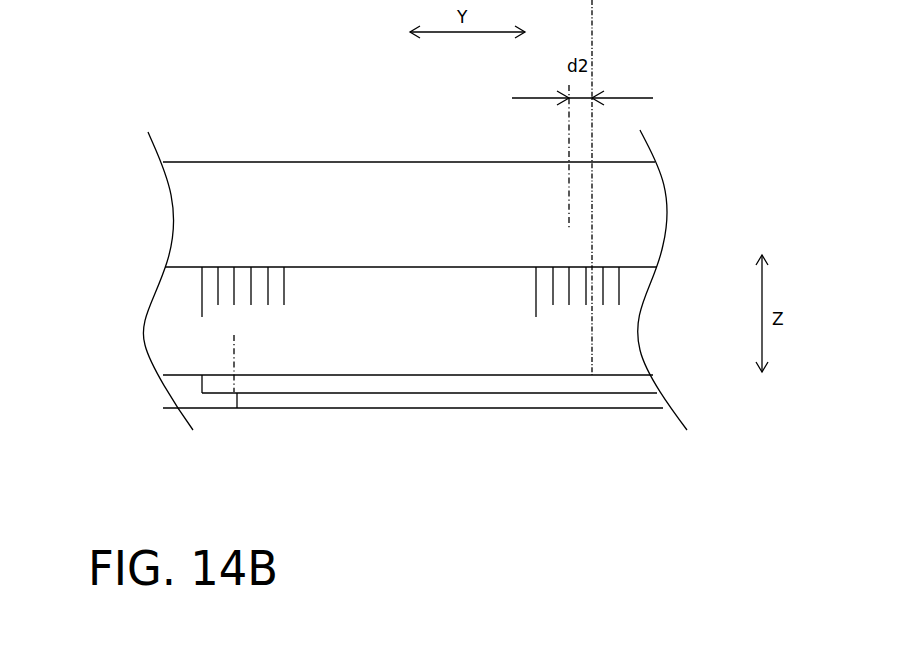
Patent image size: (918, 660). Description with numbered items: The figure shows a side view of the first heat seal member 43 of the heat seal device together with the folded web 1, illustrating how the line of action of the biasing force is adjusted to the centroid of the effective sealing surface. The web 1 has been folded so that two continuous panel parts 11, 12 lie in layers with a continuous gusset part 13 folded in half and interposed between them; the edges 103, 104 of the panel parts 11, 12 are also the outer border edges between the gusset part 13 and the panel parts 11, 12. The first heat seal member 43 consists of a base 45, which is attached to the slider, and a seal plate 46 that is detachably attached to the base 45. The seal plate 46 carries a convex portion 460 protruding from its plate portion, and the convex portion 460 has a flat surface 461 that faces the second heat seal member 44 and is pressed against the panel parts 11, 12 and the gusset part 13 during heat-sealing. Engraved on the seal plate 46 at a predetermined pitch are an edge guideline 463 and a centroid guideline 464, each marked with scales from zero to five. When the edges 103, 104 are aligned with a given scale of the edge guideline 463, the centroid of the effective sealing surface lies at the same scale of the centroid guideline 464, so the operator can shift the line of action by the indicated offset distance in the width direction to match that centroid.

The web 1 is at (467, 468).
The panel part 11 is at (467, 468).
The panel part 12 is at (467, 468).
The gusset part 13 is at (632, 409).
The first heat seal member 43 is at (376, 248).
The second heat seal member 44 is at (360, 451).
The base 45 is at (195, 221).
The seal plate 46 is at (401, 248).
The edge 103 is at (129, 402).
The edge 104 is at (235, 399).
The convex portion 460 is at (477, 382).
The flat surface 461 is at (360, 459).
The edge guideline 463 is at (251, 258).
The centroid guideline 464 is at (614, 258).